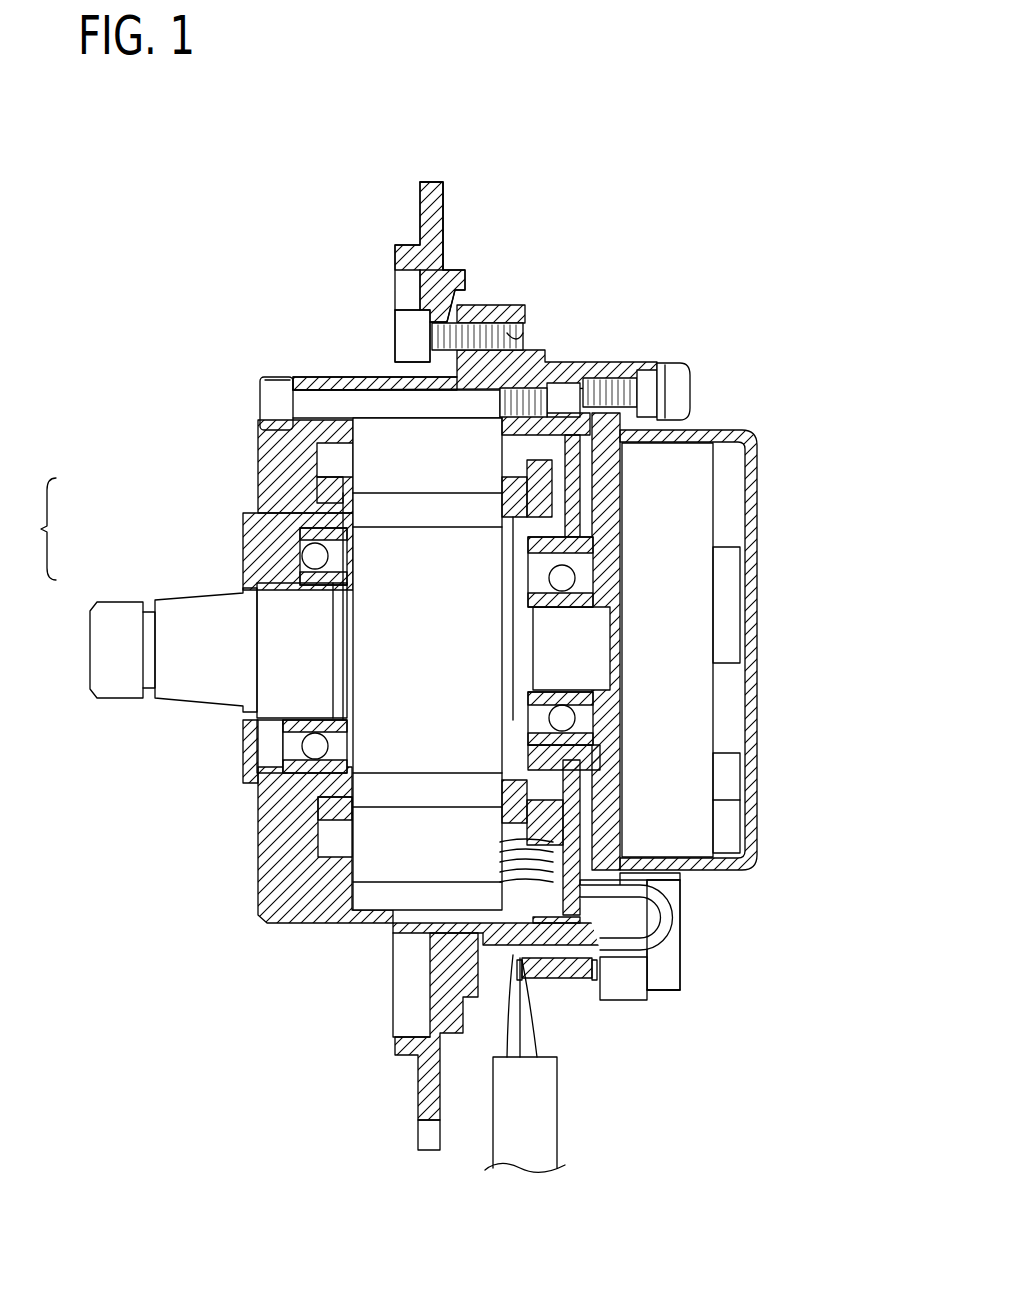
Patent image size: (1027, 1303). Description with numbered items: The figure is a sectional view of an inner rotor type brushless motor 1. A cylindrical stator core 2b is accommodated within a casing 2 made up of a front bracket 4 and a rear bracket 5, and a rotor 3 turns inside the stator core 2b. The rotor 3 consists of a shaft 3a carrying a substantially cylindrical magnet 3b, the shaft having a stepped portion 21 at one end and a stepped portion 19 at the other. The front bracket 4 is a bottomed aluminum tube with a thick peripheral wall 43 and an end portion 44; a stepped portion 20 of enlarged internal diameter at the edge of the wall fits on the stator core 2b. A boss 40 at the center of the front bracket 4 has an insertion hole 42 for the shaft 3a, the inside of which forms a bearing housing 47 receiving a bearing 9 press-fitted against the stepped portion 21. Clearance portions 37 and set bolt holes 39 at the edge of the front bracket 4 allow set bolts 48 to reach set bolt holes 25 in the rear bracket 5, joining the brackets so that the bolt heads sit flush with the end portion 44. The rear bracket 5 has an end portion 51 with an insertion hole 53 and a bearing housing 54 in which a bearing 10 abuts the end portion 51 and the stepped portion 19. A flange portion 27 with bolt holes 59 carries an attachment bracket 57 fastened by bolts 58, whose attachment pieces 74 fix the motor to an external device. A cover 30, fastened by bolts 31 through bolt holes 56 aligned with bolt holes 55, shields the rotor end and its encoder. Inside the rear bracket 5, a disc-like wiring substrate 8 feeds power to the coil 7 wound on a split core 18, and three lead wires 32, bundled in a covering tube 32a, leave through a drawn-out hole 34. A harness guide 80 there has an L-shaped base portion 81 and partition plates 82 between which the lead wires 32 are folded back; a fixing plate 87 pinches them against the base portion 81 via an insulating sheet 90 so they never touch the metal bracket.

The brushless motor 1 is at (818, 258).
The casing 2 is at (268, 933).
The stator core 2b is at (513, 360).
The rotor 3 is at (35, 529).
The shaft 3a is at (190, 605).
The magnet 3b is at (340, 512).
The front bracket 4 is at (310, 368).
The rear bracket 5 is at (613, 360).
The coil 7 is at (500, 885).
The wiring substrate 8 is at (640, 830).
The bearing 9 is at (285, 752).
The bearing 10 is at (640, 700).
The split core 18 is at (715, 842).
The stepped portion 19 is at (528, 682).
The stepped portion 20 is at (375, 915).
The stepped portion 21 is at (325, 705).
The set bolt hole 25 is at (552, 398).
The flange portion 27 is at (490, 310).
The cover 30 is at (757, 500).
The bolt 31 is at (690, 385).
The lead wire 32 is at (675, 945).
The covering tube 32a is at (545, 1112).
The drawn-out hole 34 is at (640, 900).
The clearance portion 37 is at (290, 428).
The set bolt hole 39 is at (292, 393).
The boss 40 is at (245, 538).
The insertion hole 42 is at (240, 712).
The peripheral wall 43 is at (343, 382).
The end portion 44 is at (275, 472).
The bearing housing 47 is at (290, 805).
The set bolt 48 is at (404, 398).
The end portion 51 is at (655, 888).
The insertion hole 53 is at (570, 590).
The bearing housing 54 is at (575, 720).
The bolt hole 55 is at (617, 395).
The bolt hole 56 is at (648, 395).
The attachment bracket 57 is at (460, 220).
The bolt 58 is at (410, 325).
The bolt hole 59 is at (517, 340).
The attachment piece 74 is at (432, 205).
The harness guide 80 is at (695, 990).
The base portion 81 is at (565, 965).
The partition plate 82 is at (668, 985).
The fixing plate 87 is at (605, 985).
The insulating sheet 90 is at (510, 955).